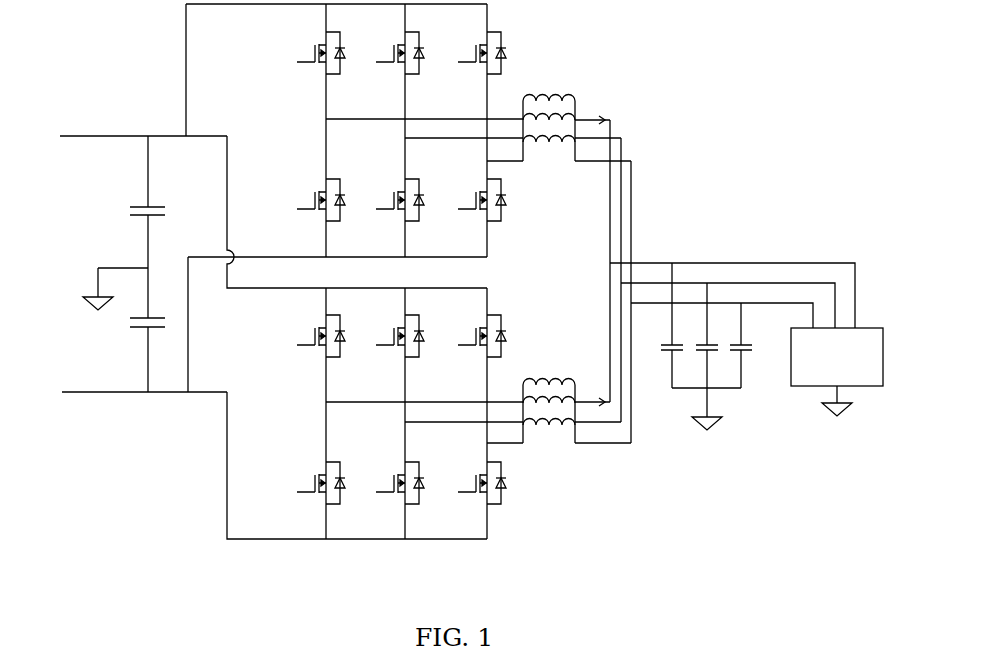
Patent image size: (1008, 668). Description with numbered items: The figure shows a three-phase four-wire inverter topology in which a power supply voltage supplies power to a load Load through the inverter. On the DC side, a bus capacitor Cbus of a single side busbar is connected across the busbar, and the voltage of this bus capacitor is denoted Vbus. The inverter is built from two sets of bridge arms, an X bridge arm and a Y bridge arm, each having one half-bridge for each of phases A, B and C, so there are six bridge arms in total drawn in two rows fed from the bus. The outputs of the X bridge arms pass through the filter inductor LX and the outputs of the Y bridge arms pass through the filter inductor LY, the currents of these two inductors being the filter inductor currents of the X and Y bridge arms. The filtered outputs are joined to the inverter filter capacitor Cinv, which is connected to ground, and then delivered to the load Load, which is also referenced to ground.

The voltage of the bus capacitor Vbus is at (132, 198).
The bus capacitor Cbus is at (127, 264).
The filter inductor of the inverter X bridge arm LX is at (478, 122).
The filter inductor of the inverter Y bridge arm LY is at (478, 419).
The inverter filter capacitor Cinv is at (696, 346).
The load Load is at (837, 372).